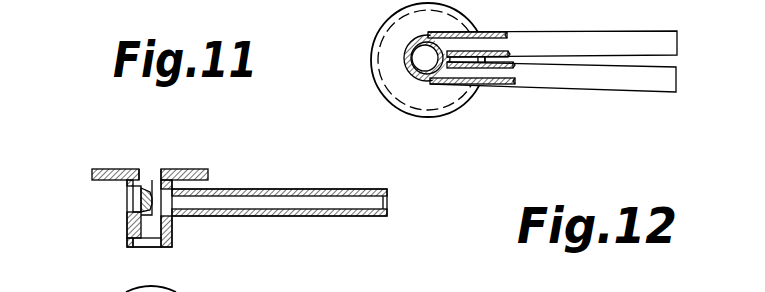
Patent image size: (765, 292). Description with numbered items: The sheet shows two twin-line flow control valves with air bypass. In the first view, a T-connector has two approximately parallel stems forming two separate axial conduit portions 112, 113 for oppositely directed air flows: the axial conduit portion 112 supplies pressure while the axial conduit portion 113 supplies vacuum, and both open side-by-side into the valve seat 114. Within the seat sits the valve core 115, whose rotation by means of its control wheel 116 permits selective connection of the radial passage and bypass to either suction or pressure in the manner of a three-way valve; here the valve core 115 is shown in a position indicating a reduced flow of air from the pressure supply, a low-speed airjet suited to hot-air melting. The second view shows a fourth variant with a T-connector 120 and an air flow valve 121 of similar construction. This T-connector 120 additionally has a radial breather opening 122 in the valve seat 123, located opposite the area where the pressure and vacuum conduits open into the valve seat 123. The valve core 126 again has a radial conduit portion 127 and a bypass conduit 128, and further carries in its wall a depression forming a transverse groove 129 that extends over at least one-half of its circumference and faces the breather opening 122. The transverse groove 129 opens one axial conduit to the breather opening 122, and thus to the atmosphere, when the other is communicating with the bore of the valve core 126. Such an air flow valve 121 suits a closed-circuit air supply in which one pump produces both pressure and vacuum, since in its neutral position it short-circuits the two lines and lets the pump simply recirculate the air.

In FIG. 11, the axial conduit portion 112 is at (557, 42).
In FIG. 11, the axial conduit portion 113 is at (580, 78).
In FIG. 11, the valve seat 114 is at (421, 73).
In FIG. 11, the valve core 115 is at (407, 68).
In FIG. 11, the control wheel 116 is at (387, 50).
In FIG. 12, the T-connector 120 is at (181, 219).
In FIG. 12, the air flow valve 121 is at (167, 163).
In FIG. 12, the radial breather opening 122 is at (128, 200).
In FIG. 12, the valve seat 123 is at (127, 230).
In FIG. 12, the valve core 126 is at (137, 246).
In FIG. 12, the radial conduit portion 127 is at (150, 238).
In FIG. 12, the bypass conduit 128 is at (150, 179).
In FIG. 12, the transverse groove 129 is at (140, 202).